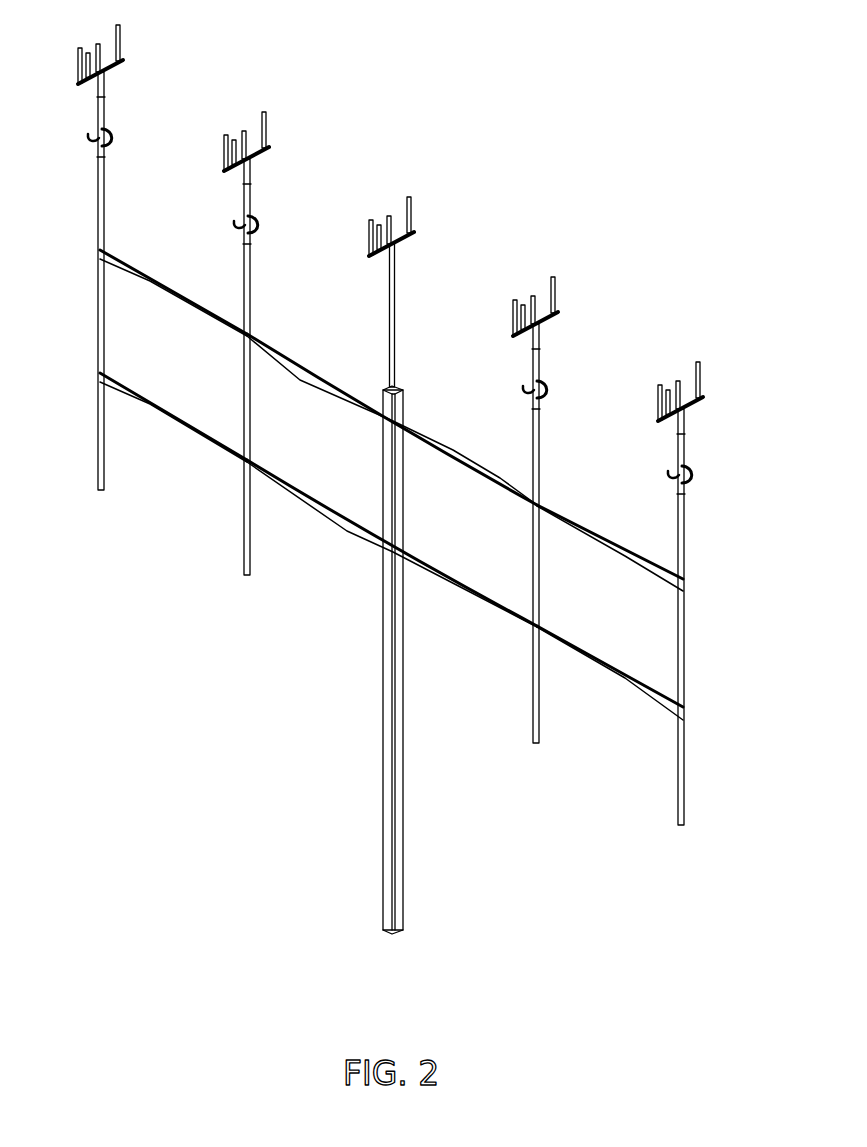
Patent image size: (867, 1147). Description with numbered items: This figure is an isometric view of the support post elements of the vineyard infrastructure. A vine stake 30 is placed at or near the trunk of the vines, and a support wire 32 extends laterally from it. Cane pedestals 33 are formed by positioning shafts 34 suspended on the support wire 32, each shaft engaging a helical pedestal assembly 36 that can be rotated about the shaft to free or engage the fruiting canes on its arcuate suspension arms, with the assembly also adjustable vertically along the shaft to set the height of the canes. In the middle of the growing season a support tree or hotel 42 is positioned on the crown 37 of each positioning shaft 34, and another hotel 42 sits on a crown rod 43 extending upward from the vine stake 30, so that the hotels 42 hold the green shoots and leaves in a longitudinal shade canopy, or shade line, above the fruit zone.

The vine stake 30 is at (383, 648).
The support wire 32 is at (347, 531).
The cane pedestal 33 is at (393, 418).
The positioning shaft 34 is at (99, 443).
The helical pedestal assembly 36 is at (104, 157).
The crown 37 is at (105, 98).
The support tree or hotel 42 is at (127, 47).
The crown rod 43 is at (395, 331).